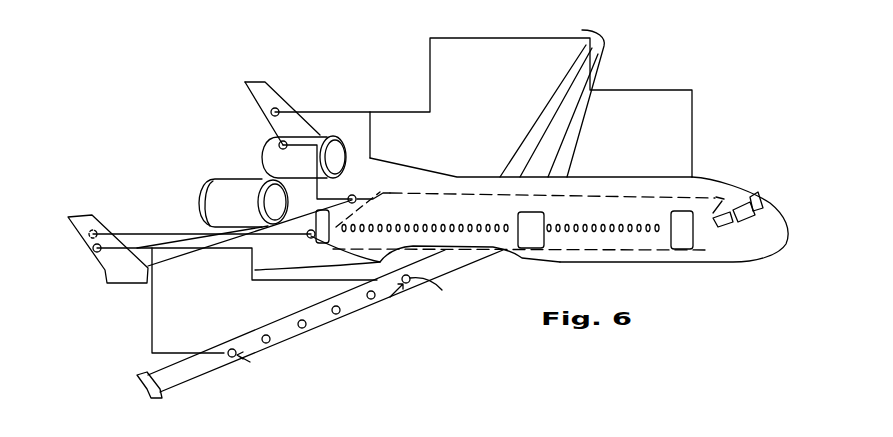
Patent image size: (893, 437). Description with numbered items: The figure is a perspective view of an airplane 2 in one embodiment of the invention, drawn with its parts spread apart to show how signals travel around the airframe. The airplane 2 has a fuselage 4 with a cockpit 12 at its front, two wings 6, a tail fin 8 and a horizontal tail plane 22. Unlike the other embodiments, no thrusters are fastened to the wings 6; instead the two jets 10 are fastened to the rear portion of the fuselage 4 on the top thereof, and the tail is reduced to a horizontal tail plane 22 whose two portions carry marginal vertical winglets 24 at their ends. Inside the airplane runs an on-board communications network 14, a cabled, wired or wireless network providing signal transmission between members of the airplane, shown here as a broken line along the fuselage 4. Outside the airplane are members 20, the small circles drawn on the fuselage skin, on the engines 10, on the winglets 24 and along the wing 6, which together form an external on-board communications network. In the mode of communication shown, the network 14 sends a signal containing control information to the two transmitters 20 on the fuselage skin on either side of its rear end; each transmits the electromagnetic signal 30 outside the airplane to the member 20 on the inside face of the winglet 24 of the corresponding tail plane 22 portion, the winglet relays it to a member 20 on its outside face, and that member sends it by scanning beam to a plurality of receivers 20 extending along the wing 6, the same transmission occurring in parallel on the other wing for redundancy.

The airplane 2 is at (723, 102).
The fuselage 4 is at (606, 176).
The wing 6 is at (550, 118).
The tail fin 8 is at (257, 88).
The jet 10 is at (272, 162).
The cockpit 12 is at (762, 200).
The on-board communications network 14 is at (638, 196).
The member 20 is at (276, 108).
The horizontal tail plane 22 is at (187, 250).
The winglet 24 is at (81, 218).
The electromagnetic signal 30 is at (515, 38).